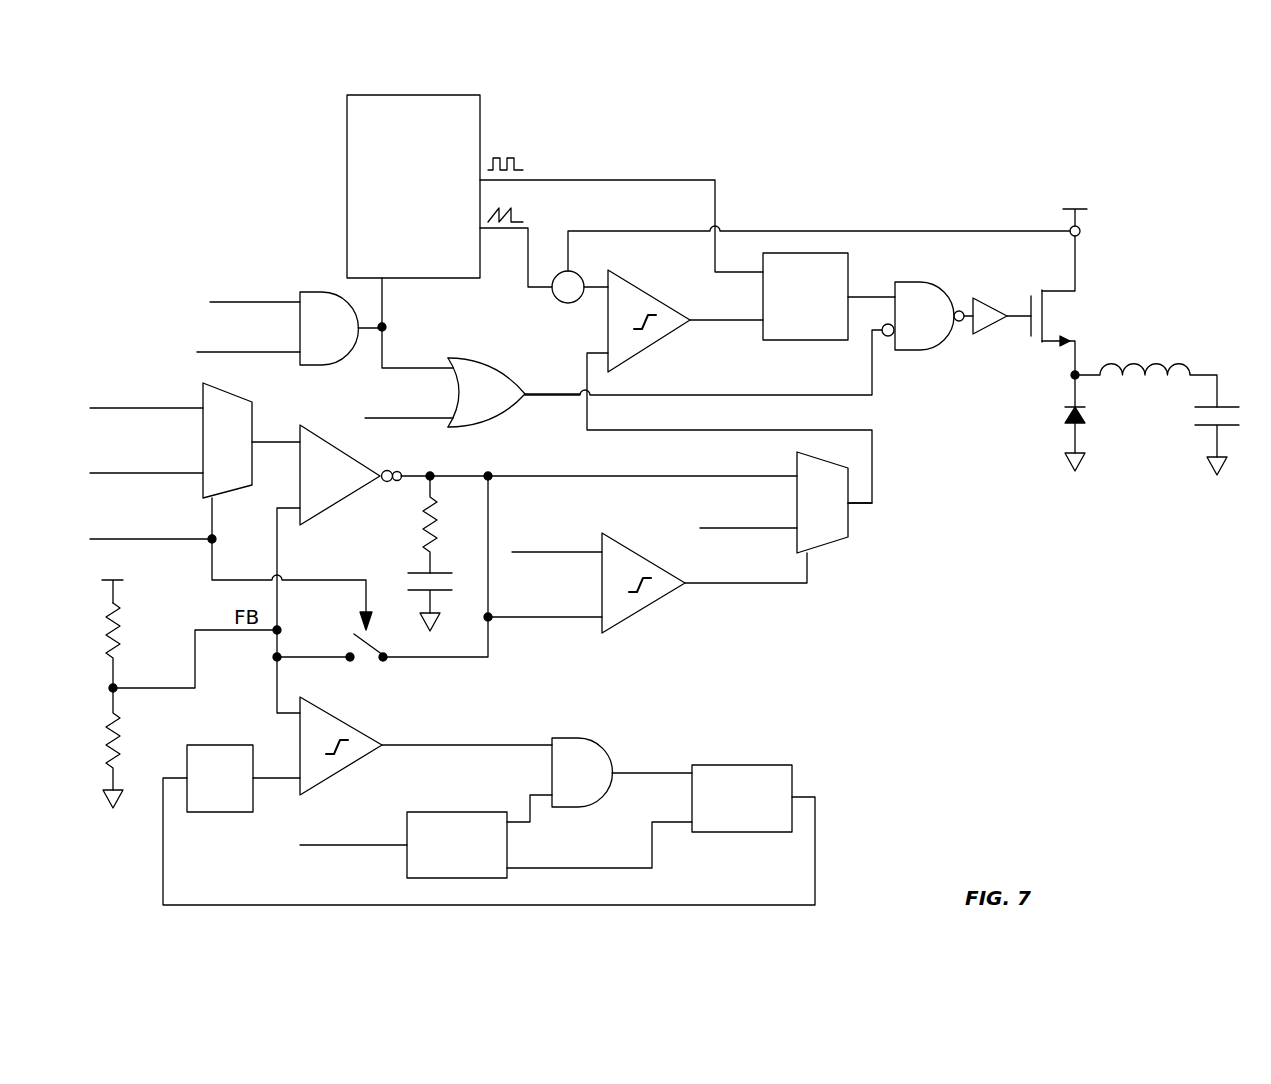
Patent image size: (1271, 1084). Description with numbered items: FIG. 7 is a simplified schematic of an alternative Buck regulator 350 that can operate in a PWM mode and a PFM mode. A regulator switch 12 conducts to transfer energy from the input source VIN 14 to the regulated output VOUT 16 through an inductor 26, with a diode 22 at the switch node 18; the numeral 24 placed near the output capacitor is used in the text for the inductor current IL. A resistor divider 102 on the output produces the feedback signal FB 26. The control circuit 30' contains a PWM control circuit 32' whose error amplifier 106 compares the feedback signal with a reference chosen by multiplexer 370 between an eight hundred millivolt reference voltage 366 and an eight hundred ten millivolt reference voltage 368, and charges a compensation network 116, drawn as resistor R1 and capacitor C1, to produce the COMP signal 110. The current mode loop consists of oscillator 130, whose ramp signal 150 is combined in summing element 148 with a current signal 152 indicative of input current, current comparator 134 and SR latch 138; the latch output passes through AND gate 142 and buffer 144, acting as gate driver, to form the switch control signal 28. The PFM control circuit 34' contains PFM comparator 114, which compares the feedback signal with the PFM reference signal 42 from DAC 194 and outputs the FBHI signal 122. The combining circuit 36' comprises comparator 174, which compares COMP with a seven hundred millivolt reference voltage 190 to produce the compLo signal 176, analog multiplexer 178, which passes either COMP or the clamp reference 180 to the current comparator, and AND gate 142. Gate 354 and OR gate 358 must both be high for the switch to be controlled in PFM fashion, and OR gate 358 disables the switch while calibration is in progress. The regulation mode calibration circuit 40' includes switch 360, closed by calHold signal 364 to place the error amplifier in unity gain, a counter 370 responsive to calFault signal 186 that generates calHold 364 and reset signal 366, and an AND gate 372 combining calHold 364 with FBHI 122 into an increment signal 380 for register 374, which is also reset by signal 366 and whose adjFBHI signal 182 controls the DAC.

The regulator 350 is at (160, 150).
The control circuit 30' is at (775, 136).
The combining circuit 36' is at (936, 618).
The regulation mode calibration circuit 40' is at (851, 723).
The oscillator 130 is at (435, 186).
The ramp signal 150 is at (497, 235).
The summing element 148 is at (558, 303).
The current signal 152 is at (846, 231).
The current comparator 134 is at (650, 347).
The SR latch 138 is at (829, 296).
The AND gate 142 is at (927, 316).
The buffer 144 is at (992, 332).
The regulator switch 12 is at (1074, 305).
The switch control signal 28 is at (1010, 307).
The input source VIN 14 is at (1074, 203).
The switch node 18 is at (1072, 373).
The inductor 26 is at (1152, 363).
The regulated output VOUT 16 is at (661, 471).
The inductor current IL 24 is at (1190, 417).
The diode 22 is at (1070, 413).
The gate 354 is at (341, 328).
The FBHI signal 122 is at (215, 300).
The compLo signal 176 is at (200, 350).
The OR gate 358 is at (514, 392).
The calHold signal 364 is at (97, 537).
The counter 370 is at (283, 393).
The reference voltage 366 is at (97, 407).
The reference voltage 368 is at (97, 470).
The error amplifier 106 is at (365, 475).
The PWM control circuit 32' is at (320, 550).
The compensation network 116 is at (391, 568).
The COMP signal 110 is at (611, 465).
The compensation resistor R1 is at (448, 524).
The compensation capacitor C1 is at (445, 601).
The switch 360 is at (352, 634).
The resistor divider 102 is at (90, 689).
The PFM comparator 114 is at (363, 762).
The PFM control circuit 34' is at (387, 706).
The DAC 194 is at (243, 778).
The PFM reference signal 42 is at (268, 773).
The adjFBHI signal 182 is at (818, 845).
The calFault signal 186 is at (307, 843).
The AND gate 372 is at (599, 780).
The increment signal 380 is at (630, 770).
The register 374 is at (742, 798).
The comparator 174 is at (648, 603).
The reference voltage 190 is at (567, 555).
The analog multiplexer 178 is at (848, 522).
The reference voltage 180 is at (705, 525).